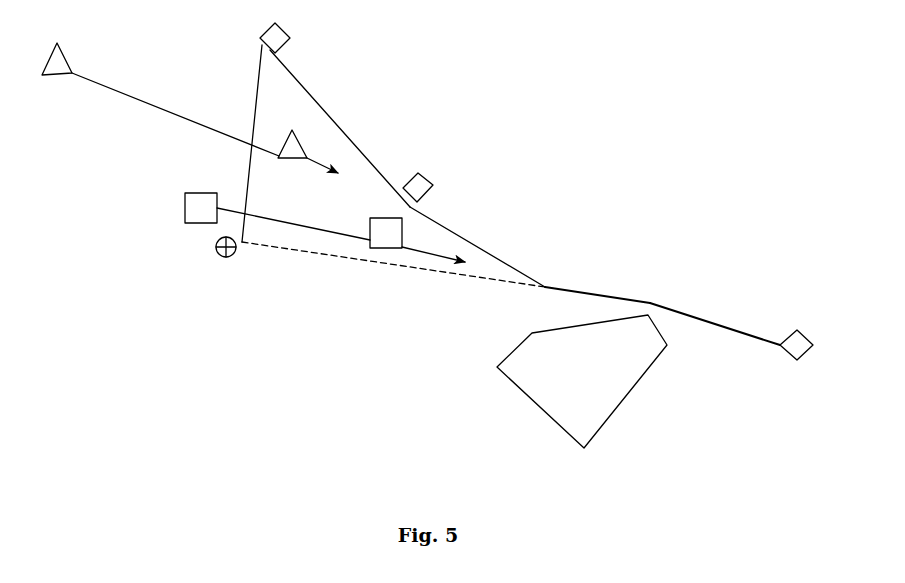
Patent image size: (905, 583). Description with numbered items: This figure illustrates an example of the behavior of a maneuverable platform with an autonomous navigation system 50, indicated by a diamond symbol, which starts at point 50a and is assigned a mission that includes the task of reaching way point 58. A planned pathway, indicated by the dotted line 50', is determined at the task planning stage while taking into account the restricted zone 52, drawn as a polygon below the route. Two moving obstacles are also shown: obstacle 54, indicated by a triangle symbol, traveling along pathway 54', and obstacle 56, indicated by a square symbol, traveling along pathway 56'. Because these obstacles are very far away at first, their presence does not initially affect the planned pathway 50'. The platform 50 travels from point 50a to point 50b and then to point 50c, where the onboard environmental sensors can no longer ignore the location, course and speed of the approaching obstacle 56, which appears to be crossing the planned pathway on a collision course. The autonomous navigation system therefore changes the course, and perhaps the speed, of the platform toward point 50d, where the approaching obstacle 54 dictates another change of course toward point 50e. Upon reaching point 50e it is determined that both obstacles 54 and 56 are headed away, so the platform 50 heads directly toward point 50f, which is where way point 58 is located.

The maneuverable platform with an autonomous navigation system 50 is at (536, 191).
The point 50a is at (736, 345).
The point 50b is at (611, 292).
The point 50c is at (488, 247).
The point 50d is at (340, 128).
The point 50e is at (242, 137).
The point 50f is at (208, 251).
The planned pathway 50' is at (393, 289).
The restricted zone 52 is at (582, 381).
The moving obstacle 54 is at (85, 47).
The pathway 54' is at (175, 94).
The moving obstacle 56 is at (274, 231).
The pathway 56' is at (341, 196).
The way point 58 is at (233, 253).